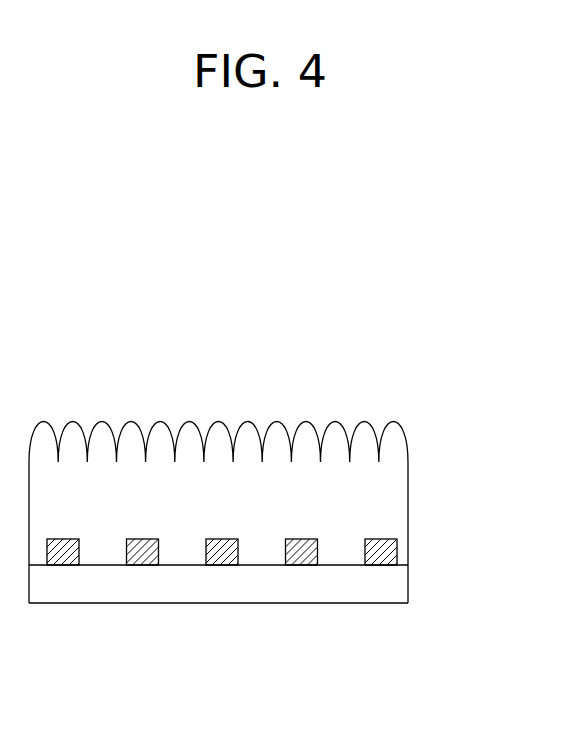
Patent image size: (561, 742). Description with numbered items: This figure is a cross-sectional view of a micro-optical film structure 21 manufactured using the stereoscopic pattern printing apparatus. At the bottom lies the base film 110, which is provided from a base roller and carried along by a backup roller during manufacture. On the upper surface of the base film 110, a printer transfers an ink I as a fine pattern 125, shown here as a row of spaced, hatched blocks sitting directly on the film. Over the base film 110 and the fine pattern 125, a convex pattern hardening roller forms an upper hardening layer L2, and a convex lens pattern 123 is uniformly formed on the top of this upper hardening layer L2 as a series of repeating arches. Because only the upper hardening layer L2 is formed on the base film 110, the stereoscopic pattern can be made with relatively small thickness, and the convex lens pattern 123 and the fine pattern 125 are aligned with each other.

The micro-optical film structure 21 is at (256, 370).
The convex lens pattern 123 is at (334, 422).
The upper hardening layer L2 is at (402, 474).
The ink I is at (394, 550).
The base film 110 is at (402, 590).
The fine pattern 125 is at (226, 566).